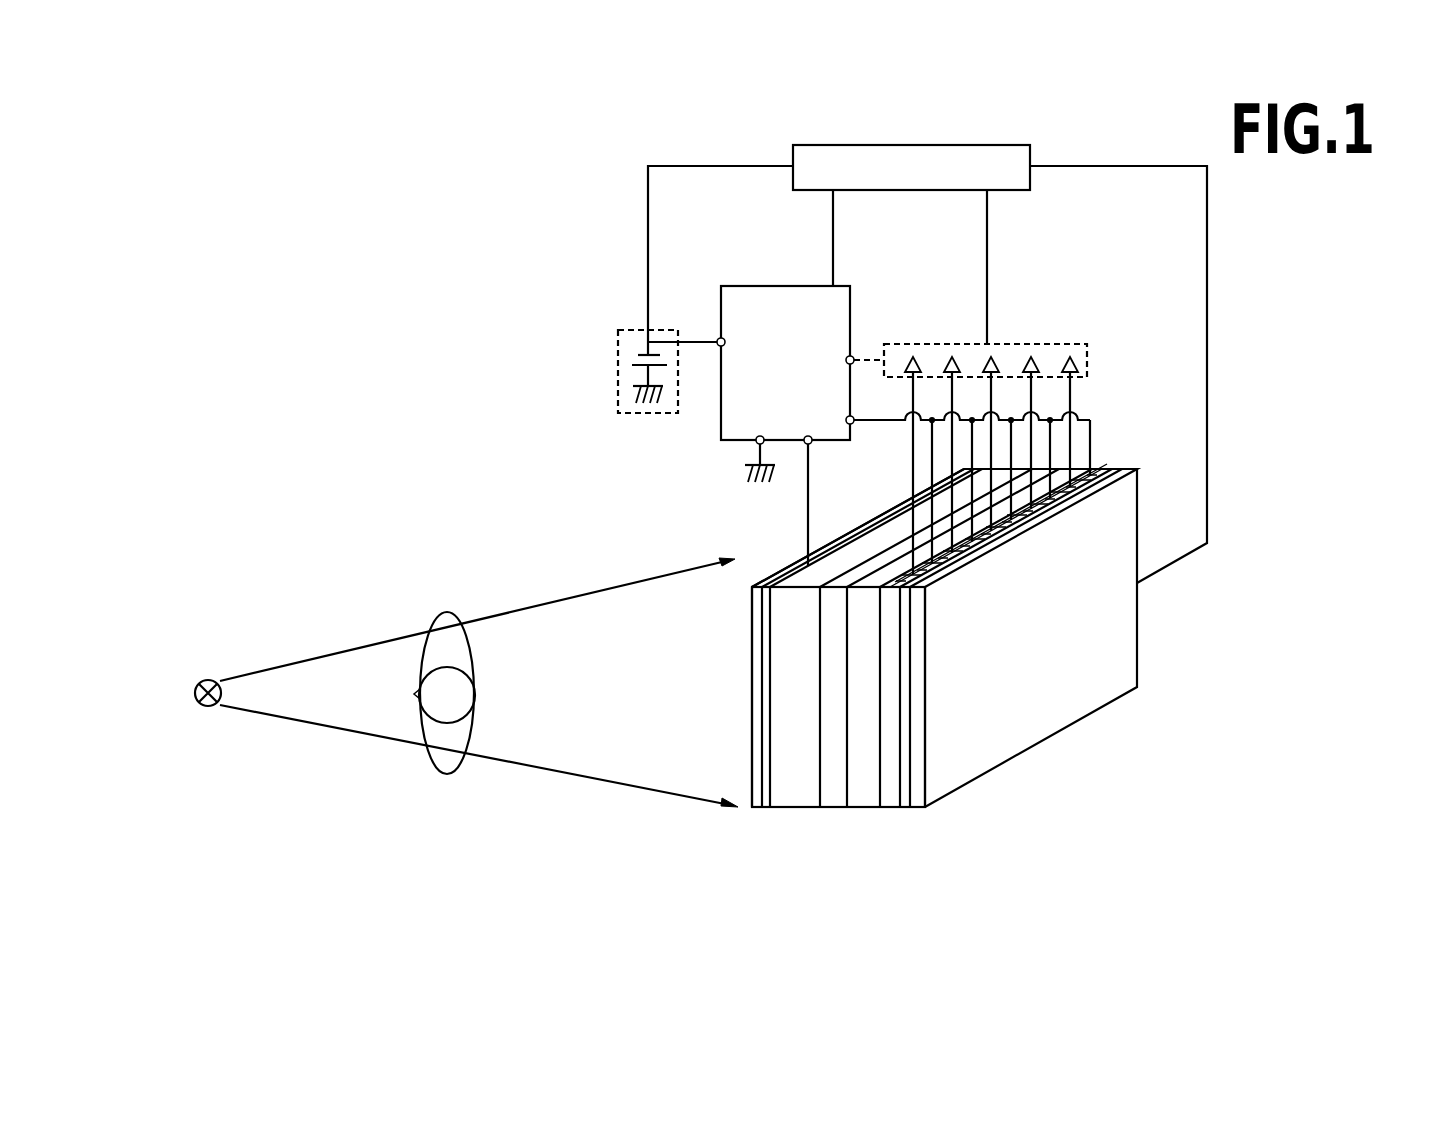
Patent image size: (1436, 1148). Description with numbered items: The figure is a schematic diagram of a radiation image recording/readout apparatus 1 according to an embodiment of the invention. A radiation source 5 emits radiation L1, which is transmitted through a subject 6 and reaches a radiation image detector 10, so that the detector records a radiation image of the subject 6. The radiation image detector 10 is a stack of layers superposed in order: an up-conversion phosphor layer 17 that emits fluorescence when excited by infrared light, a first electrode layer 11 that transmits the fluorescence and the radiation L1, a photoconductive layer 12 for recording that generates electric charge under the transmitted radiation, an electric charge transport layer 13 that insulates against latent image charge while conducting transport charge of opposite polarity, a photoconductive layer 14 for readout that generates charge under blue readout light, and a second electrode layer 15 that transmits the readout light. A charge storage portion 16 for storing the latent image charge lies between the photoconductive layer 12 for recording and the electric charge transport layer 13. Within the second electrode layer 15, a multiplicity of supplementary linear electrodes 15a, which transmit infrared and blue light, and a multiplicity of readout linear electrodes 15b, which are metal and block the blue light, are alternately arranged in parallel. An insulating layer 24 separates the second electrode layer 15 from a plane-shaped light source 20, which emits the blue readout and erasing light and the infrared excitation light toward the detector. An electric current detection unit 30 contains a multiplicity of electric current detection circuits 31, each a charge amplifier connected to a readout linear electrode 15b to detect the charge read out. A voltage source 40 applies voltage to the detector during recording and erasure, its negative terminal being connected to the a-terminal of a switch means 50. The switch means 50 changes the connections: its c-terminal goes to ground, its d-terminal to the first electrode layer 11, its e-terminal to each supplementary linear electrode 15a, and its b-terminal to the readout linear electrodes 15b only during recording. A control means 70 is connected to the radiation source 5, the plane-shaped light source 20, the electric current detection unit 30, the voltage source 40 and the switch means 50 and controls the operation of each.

The radiation image recording/readout apparatus 1 is at (546, 186).
The radiation source 5 is at (209, 680).
The subject 6 is at (447, 612).
The radiation L1 is at (545, 603).
The radiation image detector 10 is at (995, 688).
The first electrode layer 11 is at (763, 808).
The photoconductive layer for recording 12 is at (808, 808).
The electric charge transport layer 13 is at (835, 808).
The photoconductive layer for readout 14 is at (867, 808).
The second electrode layer 15 is at (890, 808).
The supplementary linear electrode 15a is at (1120, 475).
The readout linear electrode 15b is at (1092, 497).
The charge storage portion 16 is at (788, 808).
The up-conversion phosphor layer 17 is at (752, 808).
The plane-shaped light source 20 is at (918, 808).
The insulating layer 24 is at (903, 808).
The electric current detection unit 30 is at (1090, 347).
The electric current detection circuit 31 is at (1075, 364).
The voltage source 40 is at (668, 330).
The switch means 50 is at (851, 291).
The control means 70 is at (1010, 145).